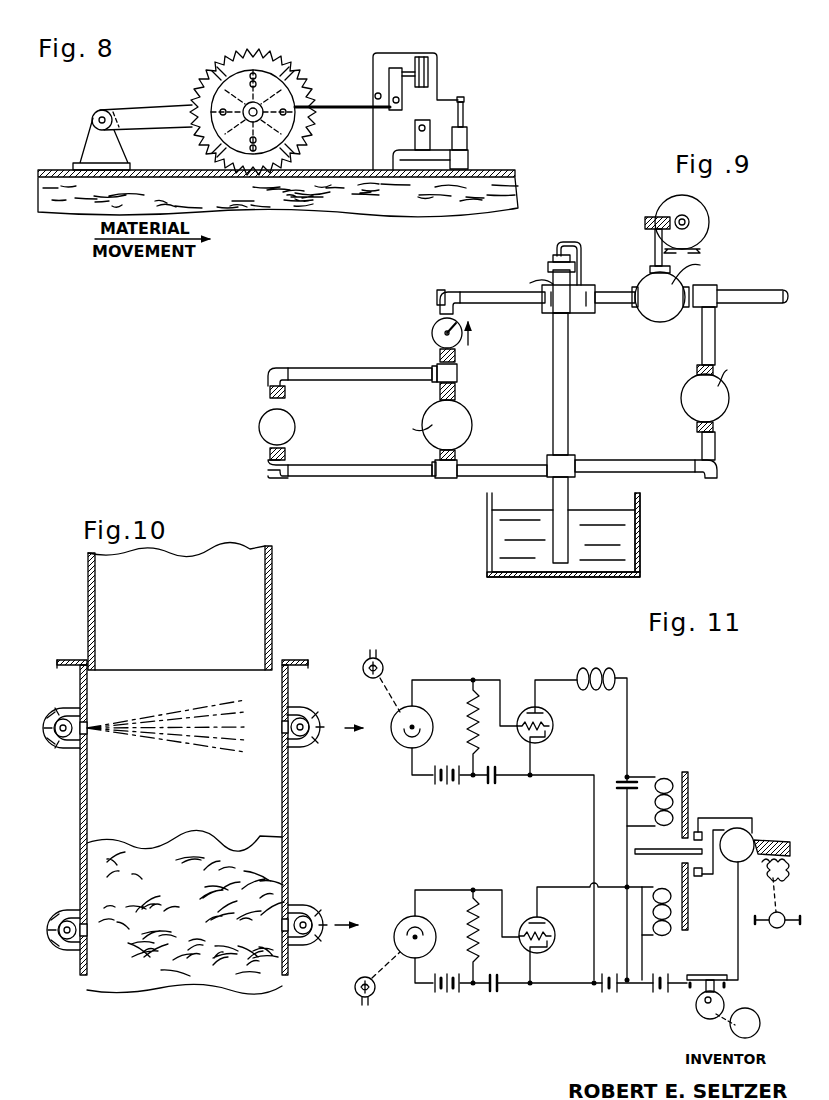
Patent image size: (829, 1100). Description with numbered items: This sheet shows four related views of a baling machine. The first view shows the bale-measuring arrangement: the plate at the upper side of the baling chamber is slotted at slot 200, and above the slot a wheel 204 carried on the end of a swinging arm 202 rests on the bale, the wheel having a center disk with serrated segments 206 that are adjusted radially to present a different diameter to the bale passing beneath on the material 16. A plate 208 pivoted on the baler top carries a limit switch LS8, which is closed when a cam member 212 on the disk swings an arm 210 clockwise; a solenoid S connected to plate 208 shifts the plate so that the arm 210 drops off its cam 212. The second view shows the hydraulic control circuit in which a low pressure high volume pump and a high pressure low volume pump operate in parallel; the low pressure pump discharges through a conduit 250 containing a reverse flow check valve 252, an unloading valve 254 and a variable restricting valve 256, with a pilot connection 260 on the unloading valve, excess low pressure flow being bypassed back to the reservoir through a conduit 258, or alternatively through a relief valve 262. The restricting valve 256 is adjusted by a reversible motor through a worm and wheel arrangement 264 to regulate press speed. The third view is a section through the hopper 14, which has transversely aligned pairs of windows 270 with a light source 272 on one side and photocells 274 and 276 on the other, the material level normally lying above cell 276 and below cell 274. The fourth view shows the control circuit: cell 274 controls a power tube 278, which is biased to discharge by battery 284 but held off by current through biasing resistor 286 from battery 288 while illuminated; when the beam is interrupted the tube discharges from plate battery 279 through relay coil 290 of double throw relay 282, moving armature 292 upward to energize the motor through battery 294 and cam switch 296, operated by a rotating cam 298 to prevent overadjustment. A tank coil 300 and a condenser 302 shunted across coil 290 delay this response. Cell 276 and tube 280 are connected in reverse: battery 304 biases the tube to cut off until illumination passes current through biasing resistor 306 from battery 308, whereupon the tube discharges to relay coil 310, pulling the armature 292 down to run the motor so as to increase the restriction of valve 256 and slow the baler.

In FIG. 8, the material web 16 is at (515, 178).
In FIG. 8, the slot 200 is at (304, 179).
In FIG. 8, the swinging arm 202 is at (163, 109).
In FIG. 8, the wheel 204 is at (296, 75).
In FIG. 8, the segments 206 is at (236, 50).
In FIG. 8, the plate 208 is at (437, 100).
In FIG. 8, the arm 210 is at (333, 106).
In FIG. 8, the cam member 212 is at (302, 135).
In FIG. 8, the limit switch LS8 is at (445, 67).
In FIG. 8, the solenoid S is at (476, 164).
In FIG. 9, the conduit 250 is at (490, 304).
In FIG. 9, the reverse flow check valve 252 is at (434, 337).
In FIG. 9, the unloading valve 254 is at (571, 314).
In FIG. 9, the variable restricting valve 256 is at (717, 310).
In FIG. 11, the variable restricting valve 256 is at (771, 930).
In FIG. 9, the conduit 258 is at (569, 410).
In FIG. 9, the pilot line 260 is at (578, 250).
In FIG. 9, the relief valve 262 is at (263, 431).
In FIG. 9, the worm and wheel arrangement 264 is at (662, 226).
In FIG. 11, the worm and wheel arrangement 264 is at (784, 868).
In FIG. 10, the hopper 14 is at (289, 804).
In FIG. 10, the windows 270 is at (285, 713).
In FIG. 10, the light source 272 is at (61, 718).
In FIG. 11, the light source 272 is at (381, 663).
In FIG. 10, the photocell 274 is at (304, 719).
In FIG. 11, the photocell 274 is at (413, 712).
In FIG. 10, the photocell 276 is at (316, 928).
In FIG. 11, the photocell 276 is at (428, 927).
In FIG. 11, the power tube 278 is at (554, 725).
In FIG. 11, the plate battery 279 is at (600, 992).
In FIG. 11, the power tube 280 is at (529, 917).
In FIG. 11, the double throw relay 282 is at (689, 790).
In FIG. 11, the battery 284 is at (490, 780).
In FIG. 11, the biasing resistor 286 is at (473, 706).
In FIG. 11, the battery 288 is at (437, 780).
In FIG. 11, the relay coil 290 is at (662, 779).
In FIG. 11, the armature 292 is at (699, 832).
In FIG. 11, the battery 294 is at (668, 992).
In FIG. 11, the switch 296 is at (697, 975).
In FIG. 11, the cam 298 is at (725, 1005).
In FIG. 11, the tank coil 300 is at (622, 677).
In FIG. 11, the condenser 302 is at (622, 786).
In FIG. 11, the battery 304 is at (495, 991).
In FIG. 11, the biasing resistor 306 is at (473, 906).
In FIG. 11, the battery 308 is at (452, 991).
In FIG. 11, the relay coil 310 is at (660, 937).